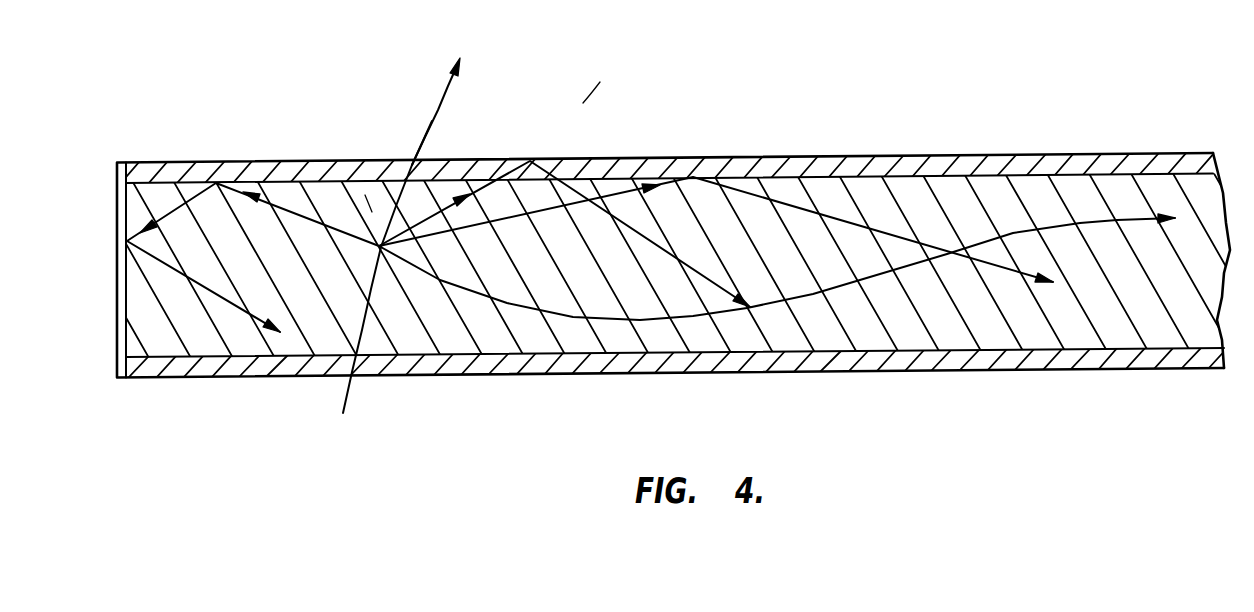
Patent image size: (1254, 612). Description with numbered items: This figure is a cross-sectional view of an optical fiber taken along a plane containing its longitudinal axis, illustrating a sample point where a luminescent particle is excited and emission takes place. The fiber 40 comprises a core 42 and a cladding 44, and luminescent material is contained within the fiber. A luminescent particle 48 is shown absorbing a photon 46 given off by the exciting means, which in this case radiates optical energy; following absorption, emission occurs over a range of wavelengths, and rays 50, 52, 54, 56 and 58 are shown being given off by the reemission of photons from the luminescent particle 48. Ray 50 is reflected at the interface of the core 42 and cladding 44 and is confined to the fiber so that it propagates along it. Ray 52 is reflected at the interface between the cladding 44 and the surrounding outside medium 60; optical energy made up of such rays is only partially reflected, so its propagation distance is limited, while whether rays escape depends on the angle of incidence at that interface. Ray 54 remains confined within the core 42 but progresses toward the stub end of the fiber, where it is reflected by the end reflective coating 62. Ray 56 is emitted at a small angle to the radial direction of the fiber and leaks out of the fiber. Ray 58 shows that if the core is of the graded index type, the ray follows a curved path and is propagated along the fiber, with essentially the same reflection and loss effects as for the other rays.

The fiber 40 is at (924, 150).
The core 42 is at (985, 194).
The cladding 44 is at (1090, 168).
The photon 46 is at (365, 195).
The luminescent particle 48 is at (357, 375).
The ray 50 is at (541, 210).
The ray 52 is at (477, 188).
The ray 54 is at (287, 198).
The ray 56 is at (432, 121).
The ray 58 is at (507, 305).
The outside medium 60 is at (577, 112).
The end reflective coating 62 is at (117, 213).